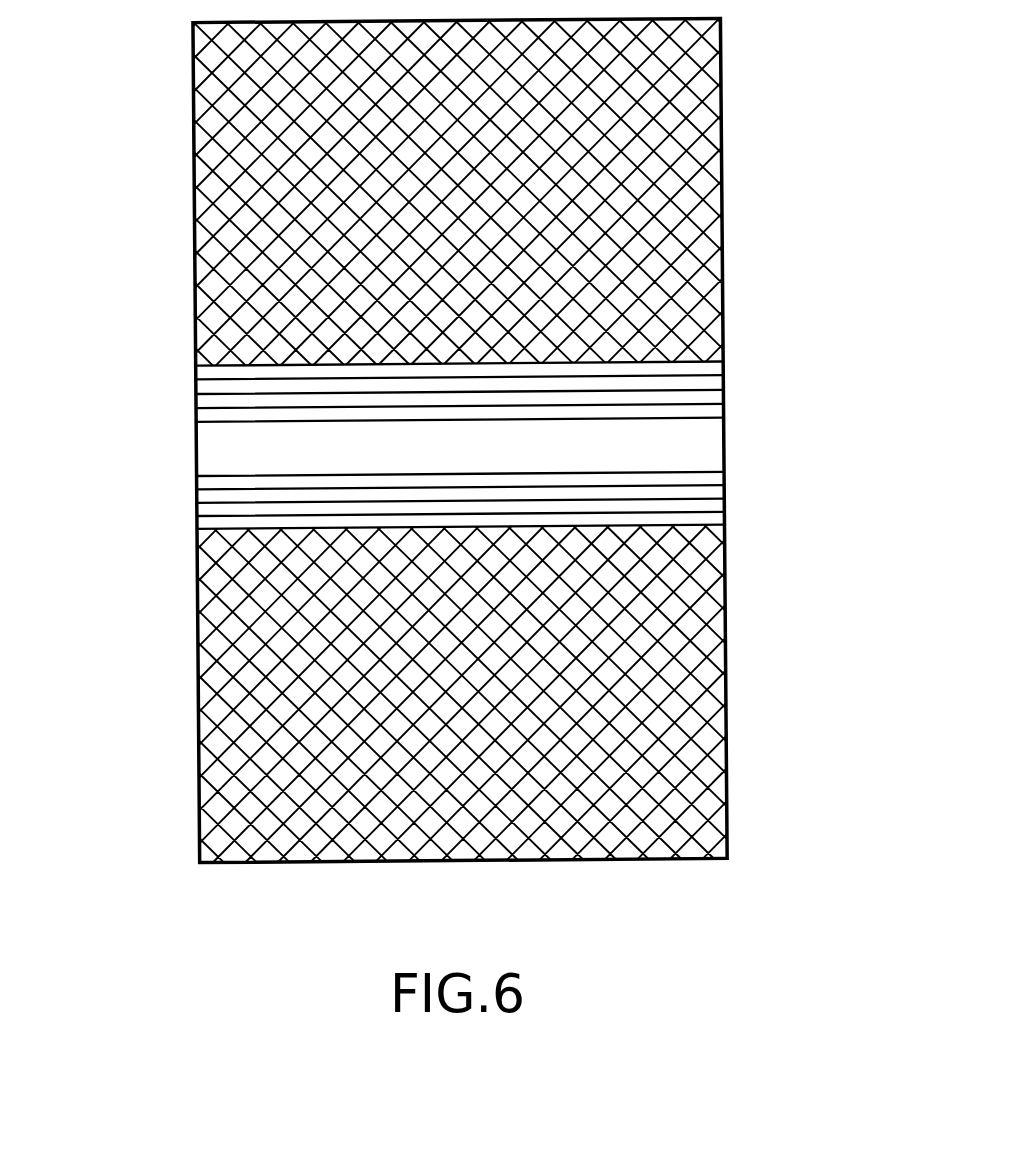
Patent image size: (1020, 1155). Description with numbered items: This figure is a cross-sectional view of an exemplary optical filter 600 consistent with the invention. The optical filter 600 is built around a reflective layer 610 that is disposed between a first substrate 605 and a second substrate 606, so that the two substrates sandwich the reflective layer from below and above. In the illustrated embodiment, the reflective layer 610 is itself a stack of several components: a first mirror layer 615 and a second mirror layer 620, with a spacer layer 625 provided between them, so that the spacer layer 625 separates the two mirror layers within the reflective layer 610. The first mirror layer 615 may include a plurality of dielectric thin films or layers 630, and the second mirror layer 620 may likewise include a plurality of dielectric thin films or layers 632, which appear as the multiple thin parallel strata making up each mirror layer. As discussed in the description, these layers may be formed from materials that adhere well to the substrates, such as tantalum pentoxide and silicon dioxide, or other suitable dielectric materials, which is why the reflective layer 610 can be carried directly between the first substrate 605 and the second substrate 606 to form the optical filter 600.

The optical filter 600 is at (763, 676).
The first substrate 605 is at (717, 846).
The second substrate 606 is at (193, 97).
The reflective layer 610 is at (735, 362).
The first mirror layer 615 is at (182, 475).
The second mirror layer 620 is at (180, 365).
The spacer layer 625 is at (213, 447).
The dielectric thin films or layers 630 is at (232, 497).
The dielectric thin films or layers 632 is at (243, 375).